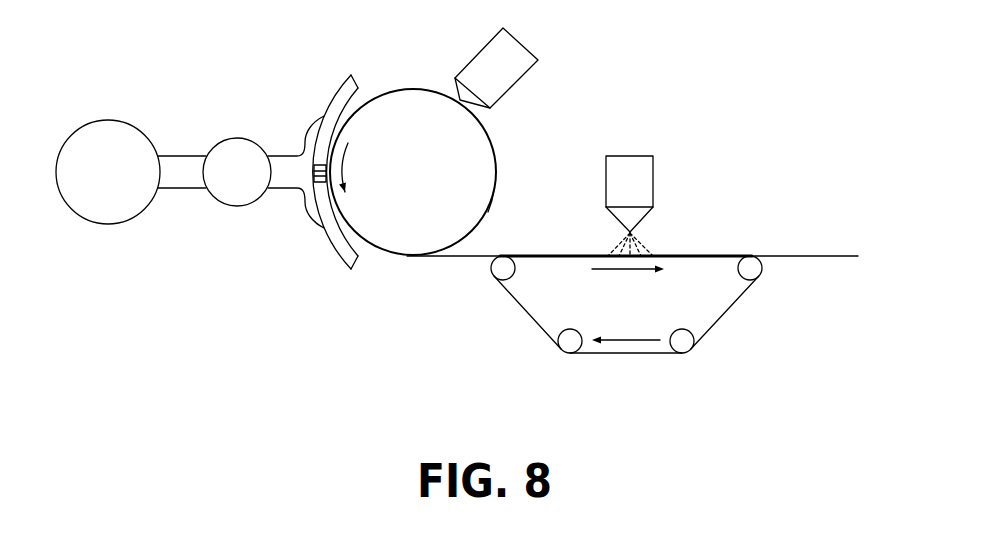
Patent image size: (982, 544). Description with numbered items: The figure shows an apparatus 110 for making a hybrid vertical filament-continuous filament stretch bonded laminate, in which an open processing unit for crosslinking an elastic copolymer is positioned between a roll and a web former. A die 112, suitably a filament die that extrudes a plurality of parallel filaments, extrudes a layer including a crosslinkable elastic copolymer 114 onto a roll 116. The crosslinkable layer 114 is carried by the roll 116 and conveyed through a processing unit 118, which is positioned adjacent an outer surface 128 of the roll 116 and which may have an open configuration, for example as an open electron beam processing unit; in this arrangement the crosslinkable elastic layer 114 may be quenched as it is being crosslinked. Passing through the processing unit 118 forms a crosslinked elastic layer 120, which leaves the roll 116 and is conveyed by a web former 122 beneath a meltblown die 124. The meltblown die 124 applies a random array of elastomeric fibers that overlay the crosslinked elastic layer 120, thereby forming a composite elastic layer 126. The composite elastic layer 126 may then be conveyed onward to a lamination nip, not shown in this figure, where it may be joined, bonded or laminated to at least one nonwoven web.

The apparatus 110 is at (588, 110).
The die 112 is at (482, 50).
The crosslinkable elastic copolymer layer 114 is at (458, 99).
The roll 116 is at (497, 162).
The processing unit 118 is at (197, 132).
The crosslinked elastic layer 120 is at (465, 258).
The web former 122 is at (724, 340).
The meltblown die 124 is at (653, 186).
The composite elastic layer 126 is at (773, 256).
The outer surface 128 is at (492, 200).